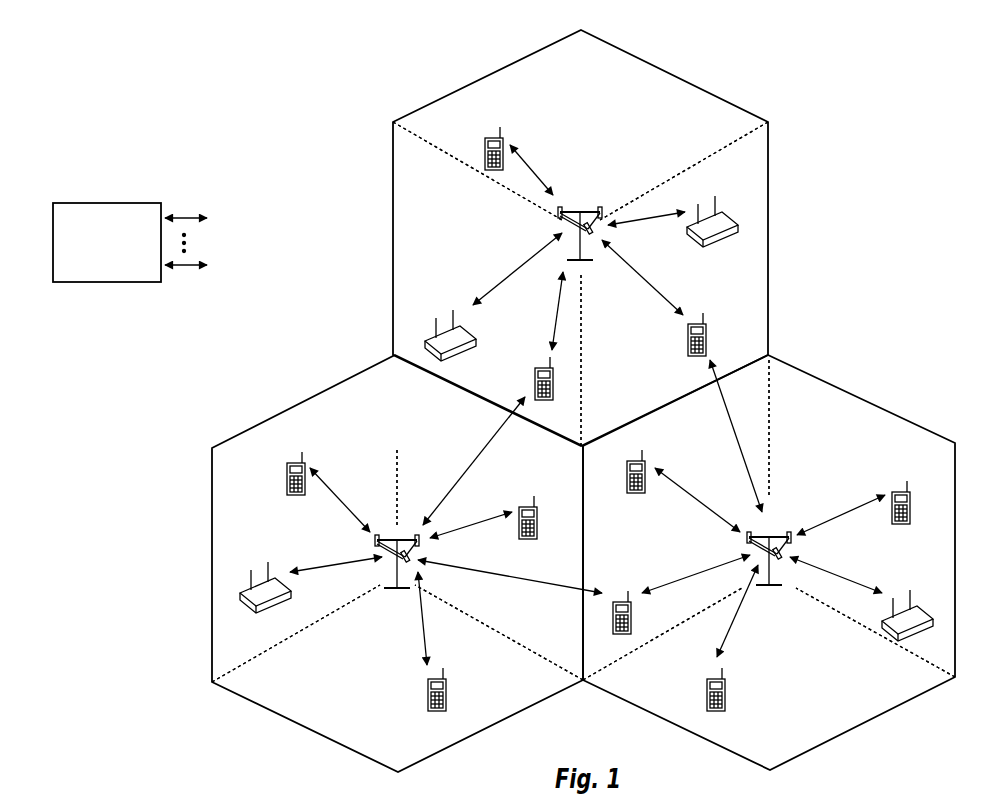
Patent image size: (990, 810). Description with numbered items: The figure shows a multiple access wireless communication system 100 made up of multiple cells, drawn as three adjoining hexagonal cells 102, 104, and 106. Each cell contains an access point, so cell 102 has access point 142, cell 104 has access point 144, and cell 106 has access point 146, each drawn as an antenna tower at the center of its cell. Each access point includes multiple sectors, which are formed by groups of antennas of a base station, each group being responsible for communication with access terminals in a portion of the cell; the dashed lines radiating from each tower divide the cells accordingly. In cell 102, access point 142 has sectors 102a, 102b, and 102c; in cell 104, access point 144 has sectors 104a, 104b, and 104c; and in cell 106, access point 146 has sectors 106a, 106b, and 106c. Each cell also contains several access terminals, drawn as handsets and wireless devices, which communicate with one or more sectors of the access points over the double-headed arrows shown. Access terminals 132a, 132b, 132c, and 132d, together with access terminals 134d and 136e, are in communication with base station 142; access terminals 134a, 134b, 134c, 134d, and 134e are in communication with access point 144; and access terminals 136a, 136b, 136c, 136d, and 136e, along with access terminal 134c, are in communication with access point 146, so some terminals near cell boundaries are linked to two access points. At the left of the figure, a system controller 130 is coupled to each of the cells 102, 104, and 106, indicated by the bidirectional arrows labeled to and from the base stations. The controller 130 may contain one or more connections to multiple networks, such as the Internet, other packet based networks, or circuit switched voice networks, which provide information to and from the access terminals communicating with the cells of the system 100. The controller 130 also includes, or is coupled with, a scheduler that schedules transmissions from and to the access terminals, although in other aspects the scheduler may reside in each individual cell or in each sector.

The multiple access wireless communication system 100 is at (890, 82).
The cell 102 is at (300, 403).
The sector 102a is at (365, 424).
The sector 102b is at (569, 624).
The sector 102c is at (323, 696).
The cell 104 is at (672, 74).
The sector 104a is at (601, 81).
The sector 104b is at (447, 216).
The sector 104c is at (667, 392).
The cell 106 is at (865, 400).
The sector 106a is at (709, 441).
The sector 106b is at (863, 429).
The sector 106c is at (834, 691).
The controller 130 is at (104, 203).
The access terminal 132a is at (285, 474).
The access terminal 132b is at (537, 517).
The access terminal 132c is at (447, 690).
The access terminal 132d is at (252, 578).
The access terminal 134a is at (485, 149).
The access terminal 134b is at (733, 203).
The access terminal 134c is at (707, 332).
The access terminal 134d is at (535, 380).
The access terminal 134e is at (432, 330).
The access terminal 136a is at (627, 475).
The access terminal 136b is at (897, 492).
The access terminal 136c is at (917, 603).
The access terminal 136d is at (707, 688).
The access terminal 136e is at (624, 602).
The access point 142 is at (400, 538).
The access point 144 is at (585, 211).
The access point 146 is at (776, 535).